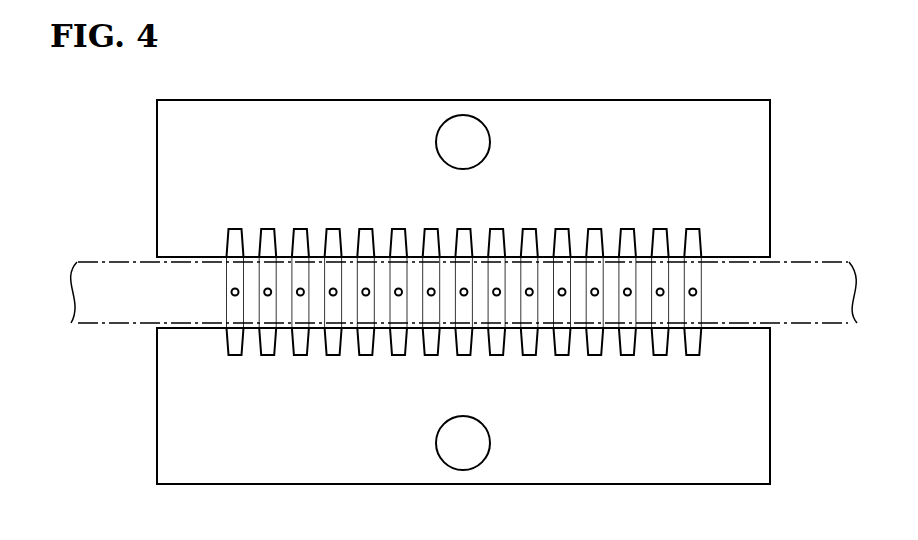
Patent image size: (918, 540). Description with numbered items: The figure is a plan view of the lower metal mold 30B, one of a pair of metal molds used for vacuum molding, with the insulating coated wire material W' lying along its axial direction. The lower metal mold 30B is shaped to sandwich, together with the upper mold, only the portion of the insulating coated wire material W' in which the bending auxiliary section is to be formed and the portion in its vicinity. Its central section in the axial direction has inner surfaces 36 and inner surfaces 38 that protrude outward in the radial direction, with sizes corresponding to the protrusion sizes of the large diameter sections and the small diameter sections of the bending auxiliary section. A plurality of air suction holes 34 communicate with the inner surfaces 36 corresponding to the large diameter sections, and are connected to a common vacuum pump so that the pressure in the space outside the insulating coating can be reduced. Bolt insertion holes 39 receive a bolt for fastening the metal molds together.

The lower metal mold 30B is at (731, 98).
The air suction holes 34 is at (333, 292).
The inner surfaces 36 is at (228, 245).
The inner surfaces 38 is at (641, 275).
The bolt insertion holes 39 is at (465, 127).
The insulating coated wire material W' is at (464, 254).